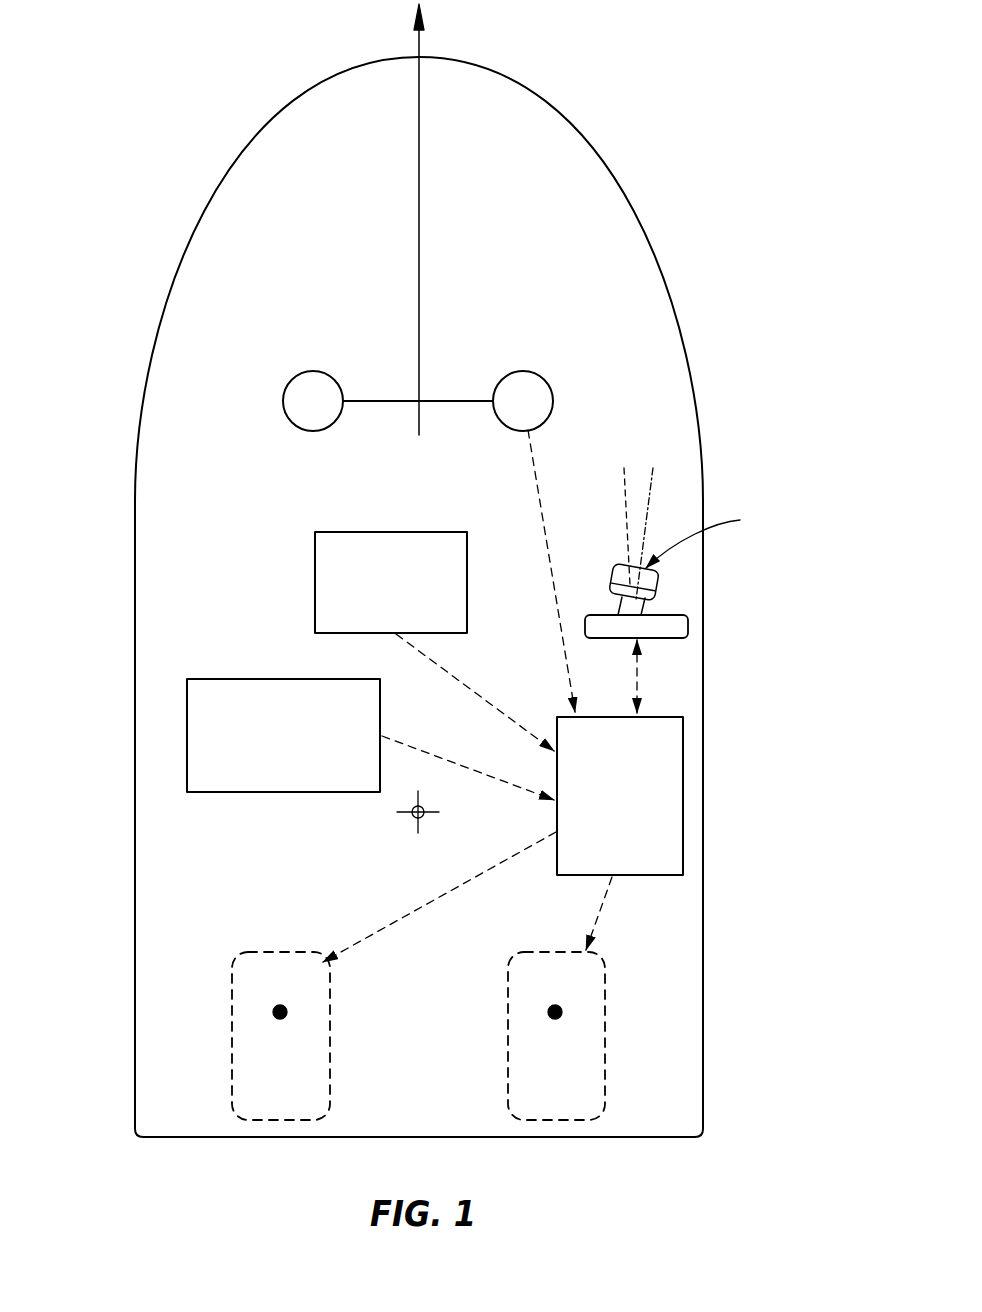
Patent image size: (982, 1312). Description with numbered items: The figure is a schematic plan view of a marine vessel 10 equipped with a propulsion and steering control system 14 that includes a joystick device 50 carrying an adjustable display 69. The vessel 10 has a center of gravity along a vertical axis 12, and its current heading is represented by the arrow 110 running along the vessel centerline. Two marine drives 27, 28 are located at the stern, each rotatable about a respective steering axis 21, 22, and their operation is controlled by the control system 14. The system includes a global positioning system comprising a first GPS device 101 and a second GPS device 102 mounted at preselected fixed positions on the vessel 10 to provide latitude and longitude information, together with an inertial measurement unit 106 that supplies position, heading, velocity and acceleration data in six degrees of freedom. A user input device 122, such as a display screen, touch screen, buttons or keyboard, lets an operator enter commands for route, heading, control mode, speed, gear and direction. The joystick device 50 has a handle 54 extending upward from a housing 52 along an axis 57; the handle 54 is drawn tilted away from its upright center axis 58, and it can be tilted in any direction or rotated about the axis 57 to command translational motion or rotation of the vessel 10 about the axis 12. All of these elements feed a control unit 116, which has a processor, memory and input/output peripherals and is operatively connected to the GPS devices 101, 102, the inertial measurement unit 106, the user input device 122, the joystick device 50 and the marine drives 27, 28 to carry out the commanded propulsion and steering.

The marine vessel 10 is at (419, 594).
The propulsion and steering control system 14 is at (176, 852).
The arrow representing current heading 110 is at (420, 203).
The first GPS device 101 is at (306, 372).
The second GPS device 102 is at (531, 372).
The axis along center of gravity 12 is at (415, 817).
The user input device 122 is at (391, 532).
The inertial measurement unit 106 is at (255, 679).
The control unit 116 is at (684, 774).
The joystick device 50 is at (672, 571).
The housing 52 is at (673, 629).
The handle 54 is at (651, 607).
The axis of the handle 57 is at (668, 491).
The upright center axis 58 is at (620, 494).
The adjustable display 69 is at (707, 531).
The steering axis of first marine drive 21 is at (275, 1008).
The steering axis of second marine drive 22 is at (562, 1008).
The first marine drive 27 is at (255, 1036).
The second marine drive 28 is at (586, 1036).